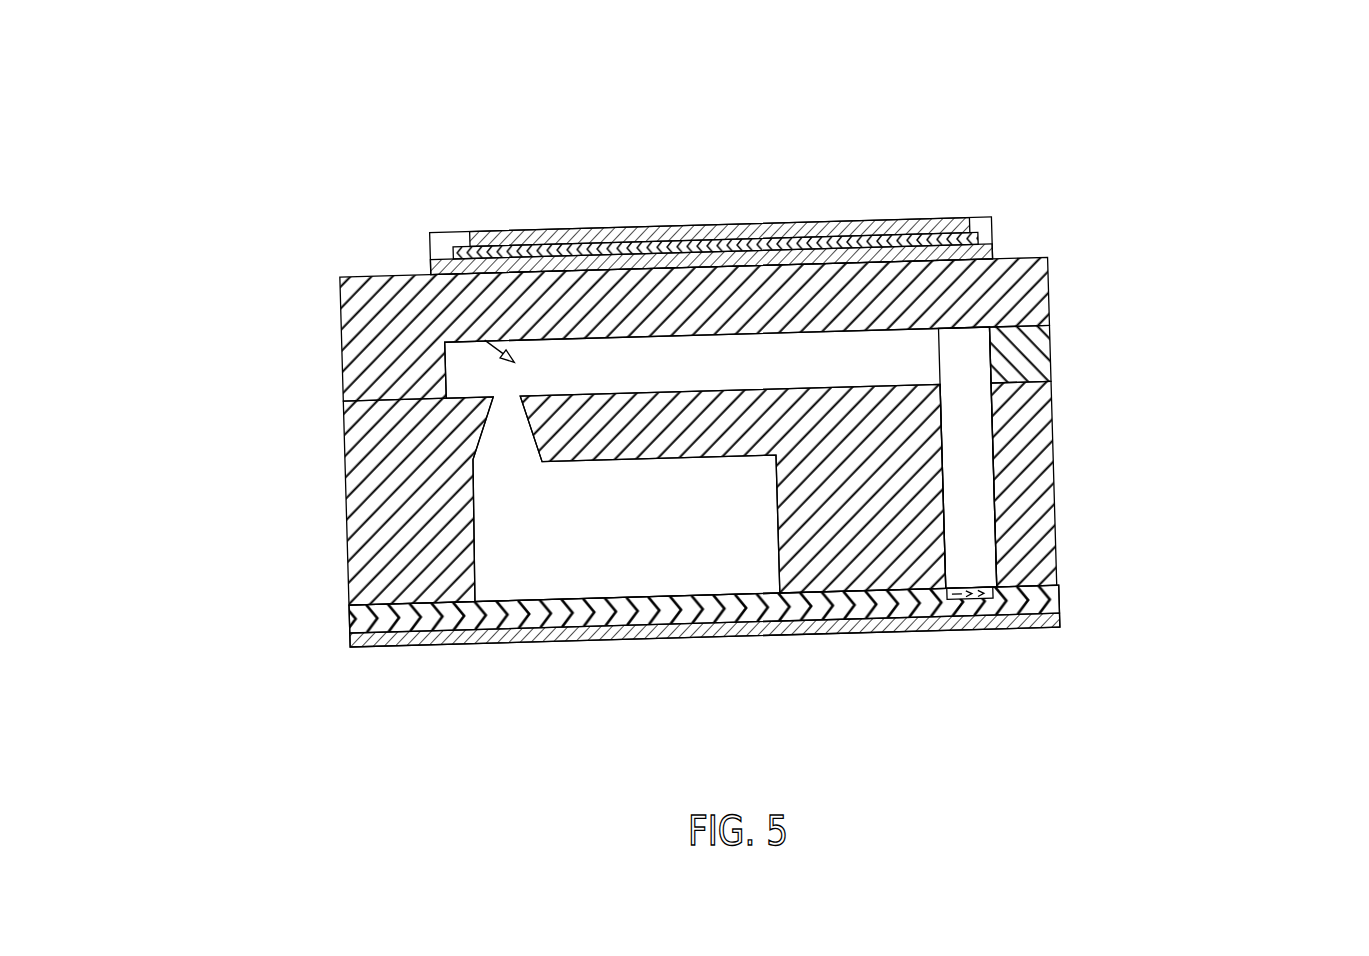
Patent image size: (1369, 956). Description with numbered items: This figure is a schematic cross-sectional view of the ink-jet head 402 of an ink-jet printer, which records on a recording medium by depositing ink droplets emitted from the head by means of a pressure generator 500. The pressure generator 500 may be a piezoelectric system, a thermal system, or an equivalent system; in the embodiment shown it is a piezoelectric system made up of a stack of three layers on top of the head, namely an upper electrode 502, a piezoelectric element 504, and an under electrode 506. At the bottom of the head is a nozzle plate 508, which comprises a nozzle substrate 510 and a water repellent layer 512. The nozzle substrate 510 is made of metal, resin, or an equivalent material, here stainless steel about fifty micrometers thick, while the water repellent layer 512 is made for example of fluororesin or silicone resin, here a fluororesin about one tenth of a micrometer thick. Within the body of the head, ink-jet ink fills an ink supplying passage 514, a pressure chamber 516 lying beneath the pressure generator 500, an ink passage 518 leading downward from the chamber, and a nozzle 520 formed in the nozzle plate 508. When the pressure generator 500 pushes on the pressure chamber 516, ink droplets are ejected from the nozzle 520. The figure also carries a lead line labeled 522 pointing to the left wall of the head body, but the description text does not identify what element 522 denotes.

The ink-jet head 402 is at (1233, 185).
The pressure generator 500 is at (900, 118).
The upper electrode 502 is at (901, 211).
The piezoelectric element 504 is at (811, 227).
The under electrode 506 is at (726, 241).
The nozzle plate 508 is at (172, 592).
The nozzle substrate 510 is at (339, 624).
The water repellent layer 512 is at (339, 644).
The ink supplying passage 514 is at (611, 522).
The pressure chamber 516 is at (403, 277).
The ink passage 518 is at (985, 450).
The nozzle 520 is at (1063, 602).
The substrate body 522 is at (326, 349).